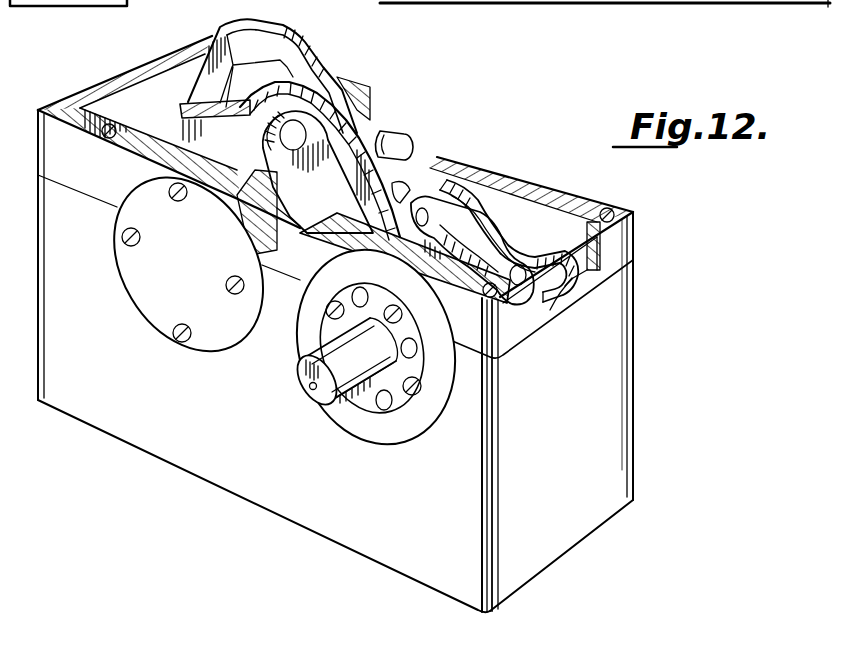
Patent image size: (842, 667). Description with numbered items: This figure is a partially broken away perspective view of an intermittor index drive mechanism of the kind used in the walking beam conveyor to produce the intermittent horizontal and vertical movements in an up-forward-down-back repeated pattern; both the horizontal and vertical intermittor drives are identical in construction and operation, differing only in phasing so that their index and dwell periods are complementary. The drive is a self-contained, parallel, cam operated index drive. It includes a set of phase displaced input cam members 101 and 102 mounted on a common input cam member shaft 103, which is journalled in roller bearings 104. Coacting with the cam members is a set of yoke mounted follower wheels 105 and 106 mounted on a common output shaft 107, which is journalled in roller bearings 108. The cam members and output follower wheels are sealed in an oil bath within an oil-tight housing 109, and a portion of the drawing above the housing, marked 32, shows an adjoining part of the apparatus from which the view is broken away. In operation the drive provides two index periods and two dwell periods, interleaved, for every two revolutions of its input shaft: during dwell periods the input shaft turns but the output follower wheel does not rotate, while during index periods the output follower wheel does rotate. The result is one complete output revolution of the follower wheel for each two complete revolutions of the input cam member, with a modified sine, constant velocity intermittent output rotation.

The housing of preceding figure 32 is at (586, 1).
The input cam member 101 is at (362, 133).
The input cam member 102 is at (318, 44).
The input cam member shaft 103 is at (407, 148).
The roller bearings 104 is at (145, 202).
The follower wheel 105 is at (463, 173).
The follower wheel 106 is at (543, 243).
The output shaft 107 is at (313, 388).
The roller bearings 108 is at (413, 432).
The housing 109 is at (135, 437).